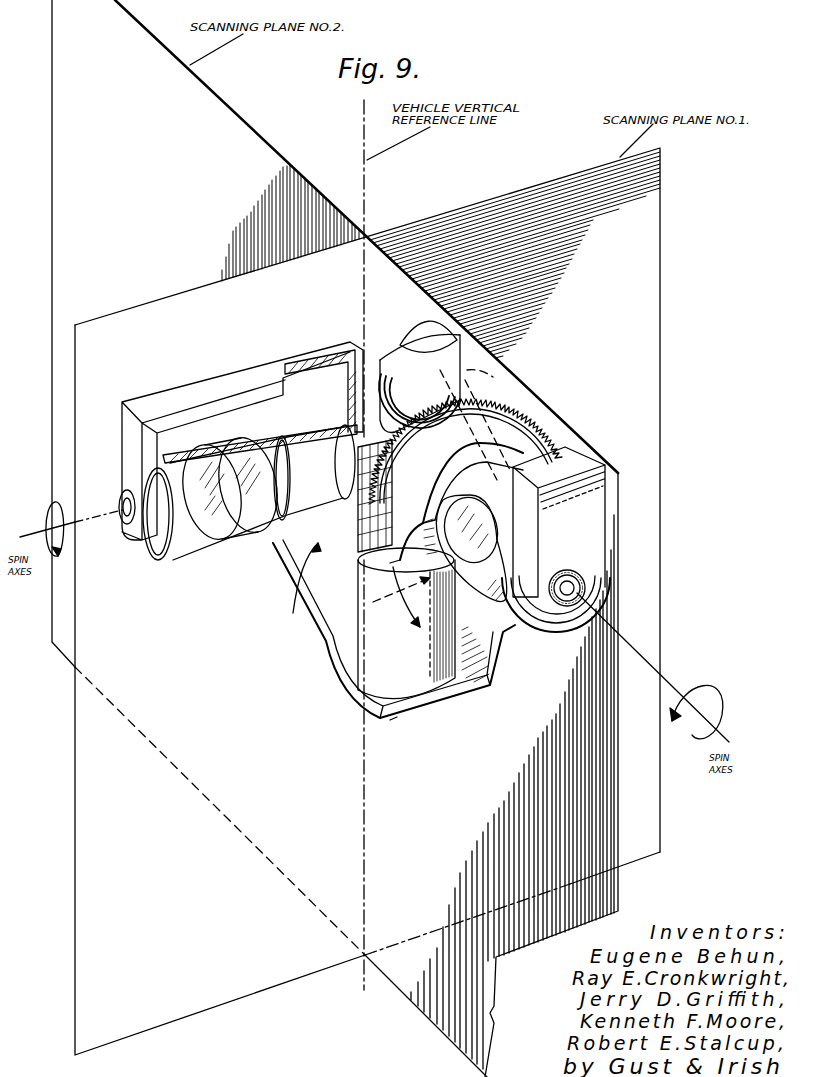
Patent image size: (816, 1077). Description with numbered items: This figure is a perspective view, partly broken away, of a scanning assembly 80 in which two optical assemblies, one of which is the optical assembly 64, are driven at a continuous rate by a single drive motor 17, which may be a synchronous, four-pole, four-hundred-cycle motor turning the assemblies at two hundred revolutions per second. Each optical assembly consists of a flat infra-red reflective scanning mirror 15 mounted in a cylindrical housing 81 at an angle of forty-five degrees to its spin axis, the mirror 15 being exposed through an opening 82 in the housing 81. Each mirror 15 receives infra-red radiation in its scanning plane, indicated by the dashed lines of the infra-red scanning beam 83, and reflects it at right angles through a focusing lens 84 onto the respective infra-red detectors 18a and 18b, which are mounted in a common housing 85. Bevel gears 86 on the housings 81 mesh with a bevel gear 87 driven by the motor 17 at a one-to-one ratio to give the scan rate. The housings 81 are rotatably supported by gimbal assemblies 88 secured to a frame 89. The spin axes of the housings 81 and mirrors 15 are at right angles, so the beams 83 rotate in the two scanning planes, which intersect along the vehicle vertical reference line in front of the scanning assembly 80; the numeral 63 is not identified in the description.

The scanning mirror 15 is at (207, 527).
The drive motor 17 is at (393, 661).
The infra-red detector 18a is at (388, 420).
The infra-red detector 18b is at (455, 397).
The pivot bearing 63 is at (147, 543).
The optical assembly 64 is at (553, 630).
The scanning assembly 80 is at (546, 290).
The cylindrical housing 81 is at (609, 553).
The opening 82 is at (242, 527).
The infra-red scanning beam 83 is at (307, 570).
The focusing lens 84 is at (273, 452).
The common housing 85 is at (430, 330).
The bevel gear 86 is at (517, 428).
The bevel gear 87 is at (326, 622).
The gimbal assembly 88 is at (567, 465).
The frame 89 is at (493, 693).